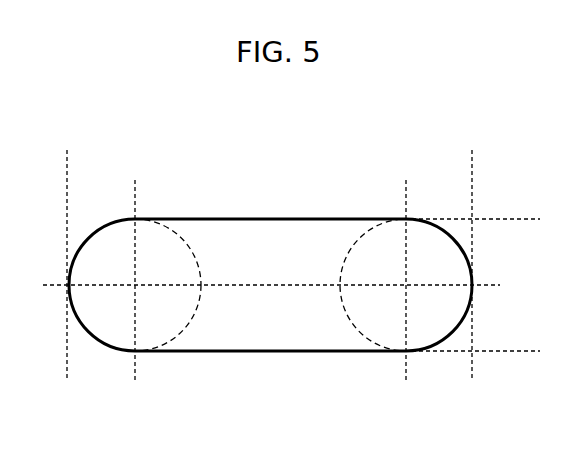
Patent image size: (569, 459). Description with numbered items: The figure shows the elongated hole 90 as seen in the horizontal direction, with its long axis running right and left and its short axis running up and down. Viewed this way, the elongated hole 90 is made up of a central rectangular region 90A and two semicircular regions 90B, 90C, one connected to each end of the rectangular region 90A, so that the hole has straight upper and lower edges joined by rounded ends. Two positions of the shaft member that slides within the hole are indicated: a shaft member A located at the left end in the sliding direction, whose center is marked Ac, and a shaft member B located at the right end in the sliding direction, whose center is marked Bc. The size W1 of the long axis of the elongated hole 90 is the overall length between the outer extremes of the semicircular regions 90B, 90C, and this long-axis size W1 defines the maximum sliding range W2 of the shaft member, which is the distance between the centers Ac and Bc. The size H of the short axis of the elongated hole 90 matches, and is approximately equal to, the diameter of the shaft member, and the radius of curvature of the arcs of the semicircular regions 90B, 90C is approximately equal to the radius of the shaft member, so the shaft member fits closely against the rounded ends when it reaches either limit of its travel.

The elongated hole 90 is at (287, 329).
The rectangular region 90A is at (405, 368).
The semicircular region 90B is at (134, 368).
The semicircular region 90C is at (471, 368).
The shaft member A is at (194, 258).
The shaft member B is at (348, 262).
The center of shaft member A Ac is at (138, 298).
The center of shaft member B Bc is at (410, 298).
The size of the long axis W1 is at (471, 161).
The maximum sliding range W2 is at (405, 194).
The size of the short axis H is at (519, 220).